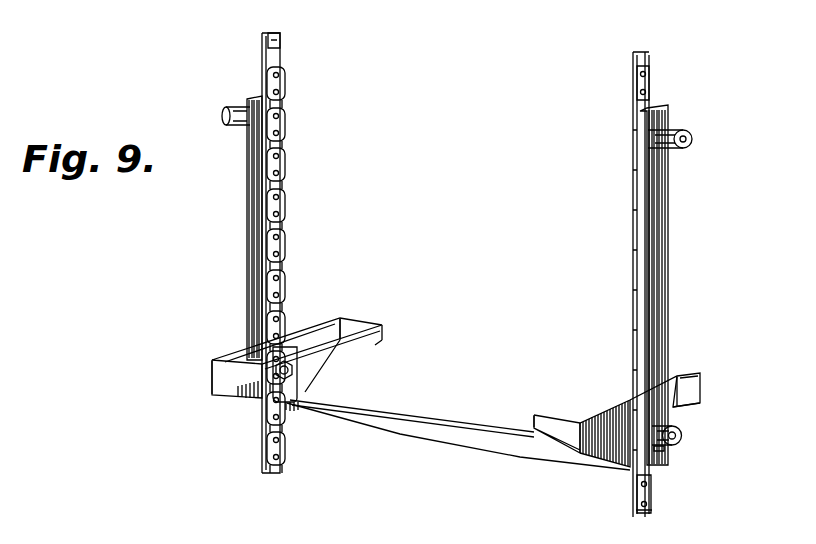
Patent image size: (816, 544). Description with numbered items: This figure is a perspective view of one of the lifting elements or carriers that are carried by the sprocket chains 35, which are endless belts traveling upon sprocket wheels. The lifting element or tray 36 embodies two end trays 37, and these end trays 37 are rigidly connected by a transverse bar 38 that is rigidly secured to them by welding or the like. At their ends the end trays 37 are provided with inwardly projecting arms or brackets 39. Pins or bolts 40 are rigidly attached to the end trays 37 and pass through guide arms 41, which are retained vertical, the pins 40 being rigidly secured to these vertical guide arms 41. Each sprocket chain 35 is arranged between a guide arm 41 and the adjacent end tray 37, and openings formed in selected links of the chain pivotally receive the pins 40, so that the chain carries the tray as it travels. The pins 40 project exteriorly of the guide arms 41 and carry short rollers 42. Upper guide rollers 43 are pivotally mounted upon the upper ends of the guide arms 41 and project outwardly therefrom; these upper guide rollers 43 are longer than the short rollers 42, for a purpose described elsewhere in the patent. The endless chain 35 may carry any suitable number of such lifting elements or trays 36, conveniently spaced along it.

The sprocket chains 35 is at (282, 212).
The lifting elements or trays 36 is at (382, 402).
The end trays 37 is at (240, 348).
The transverse bar 38 is at (470, 428).
The inwardly projecting arms or brackets 39 is at (358, 327).
The pins or bolts 40 is at (682, 435).
The guide arms 41 is at (255, 232).
The short rollers 42 is at (660, 450).
The upper guide rollers 43 is at (227, 107).